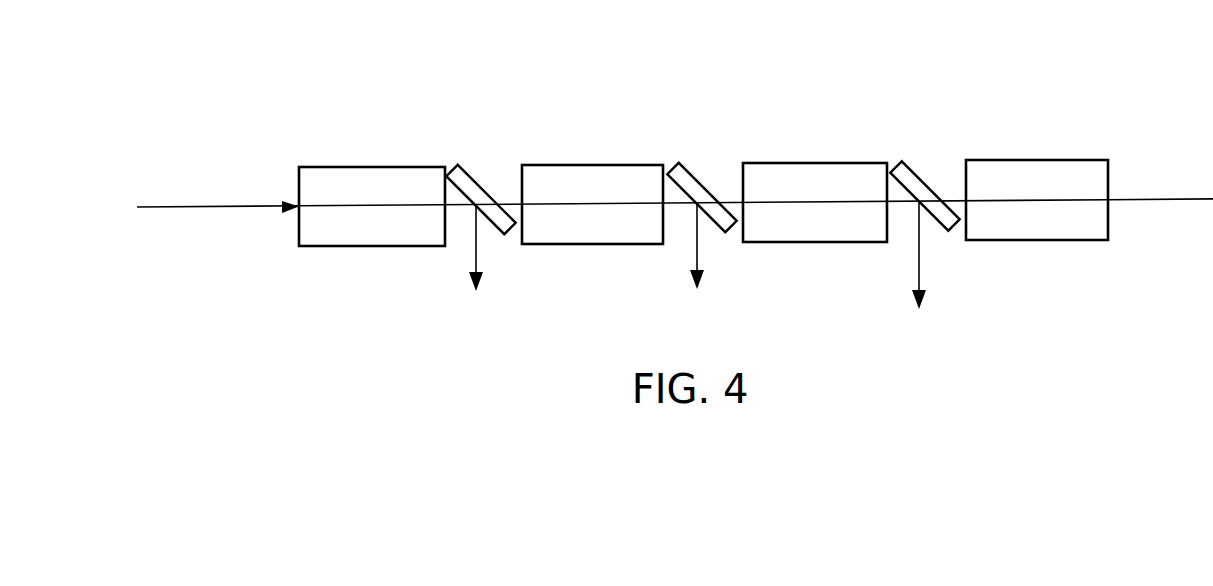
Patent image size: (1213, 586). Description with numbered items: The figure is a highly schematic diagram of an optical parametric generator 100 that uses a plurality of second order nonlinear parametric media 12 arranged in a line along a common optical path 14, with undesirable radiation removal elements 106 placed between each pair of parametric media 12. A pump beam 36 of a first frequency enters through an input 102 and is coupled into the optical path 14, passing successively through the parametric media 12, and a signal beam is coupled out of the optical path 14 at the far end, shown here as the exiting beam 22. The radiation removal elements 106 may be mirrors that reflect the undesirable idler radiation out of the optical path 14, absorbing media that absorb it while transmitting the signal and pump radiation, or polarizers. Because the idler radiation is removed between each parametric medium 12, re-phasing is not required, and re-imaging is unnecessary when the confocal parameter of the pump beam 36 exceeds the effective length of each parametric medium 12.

The parametric generator 100 is at (733, 78).
The parametric media 12 is at (372, 247).
The optical path 14 is at (400, 165).
The output beam 22 is at (1185, 205).
The pump beam 36 is at (200, 209).
The input 102 is at (297, 210).
The radiation removal elements 106 is at (478, 181).